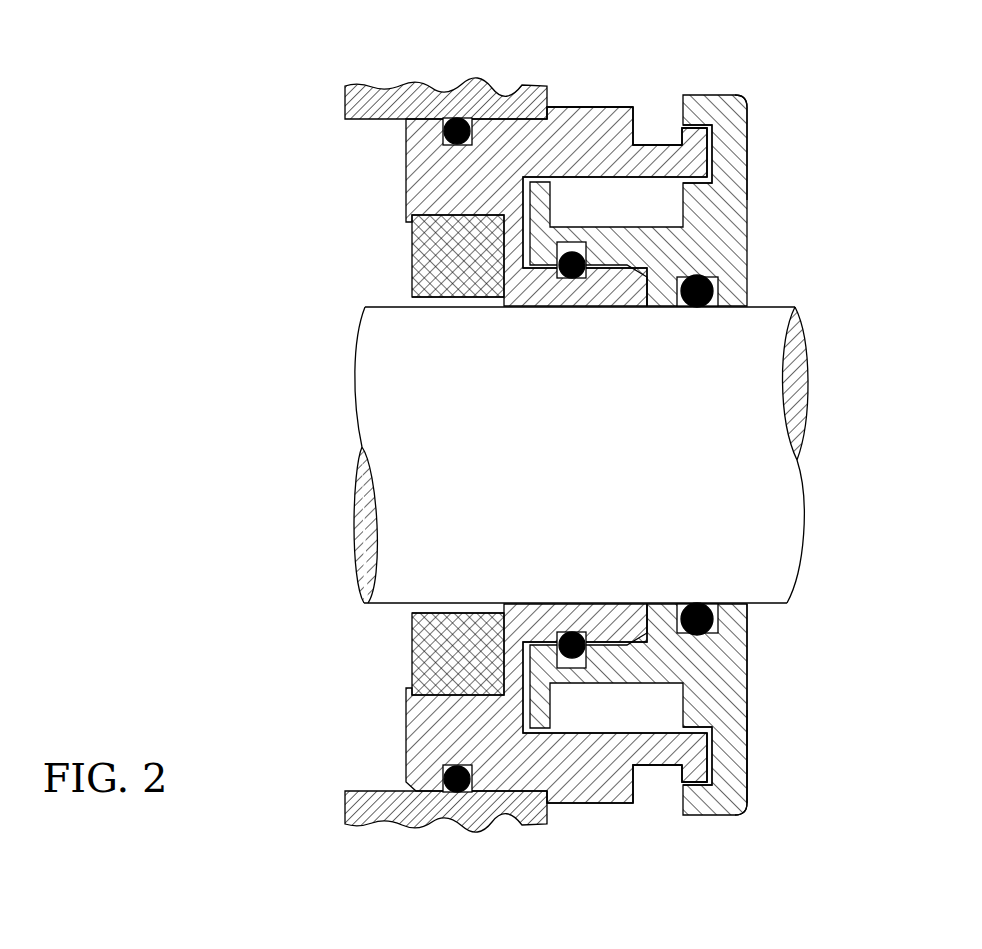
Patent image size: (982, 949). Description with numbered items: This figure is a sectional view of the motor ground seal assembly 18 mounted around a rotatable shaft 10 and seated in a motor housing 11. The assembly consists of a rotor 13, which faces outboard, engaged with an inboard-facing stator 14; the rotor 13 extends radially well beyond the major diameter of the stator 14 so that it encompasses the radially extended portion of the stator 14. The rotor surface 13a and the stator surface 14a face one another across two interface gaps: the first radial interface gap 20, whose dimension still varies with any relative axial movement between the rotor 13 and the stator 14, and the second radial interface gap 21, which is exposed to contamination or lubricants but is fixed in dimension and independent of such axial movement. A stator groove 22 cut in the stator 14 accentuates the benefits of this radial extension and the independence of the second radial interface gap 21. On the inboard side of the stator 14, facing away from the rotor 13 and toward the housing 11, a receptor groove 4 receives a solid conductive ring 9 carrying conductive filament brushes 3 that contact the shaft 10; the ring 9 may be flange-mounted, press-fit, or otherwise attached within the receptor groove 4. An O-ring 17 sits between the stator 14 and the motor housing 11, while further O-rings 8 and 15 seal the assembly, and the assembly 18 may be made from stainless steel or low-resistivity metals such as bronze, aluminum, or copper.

The conductive brushes 3 is at (457, 258).
The receptor groove 4 is at (415, 206).
The O-ring 8 is at (572, 278).
The solid conductive ring 9 is at (412, 252).
The rotatable shaft 10 is at (803, 473).
The housing 11 is at (345, 99).
The rotor 13 is at (722, 233).
The rotor surface 13a is at (748, 197).
The stator 14 is at (572, 118).
The stator surface 14a is at (597, 103).
The O-ring 15 is at (718, 288).
The O-ring 17 is at (455, 118).
The motor ground seal assembly 18 is at (774, 627).
The first radial interface gap 20 is at (708, 142).
The second radial interface gap 21 is at (682, 127).
The stator groove 22 is at (652, 142).